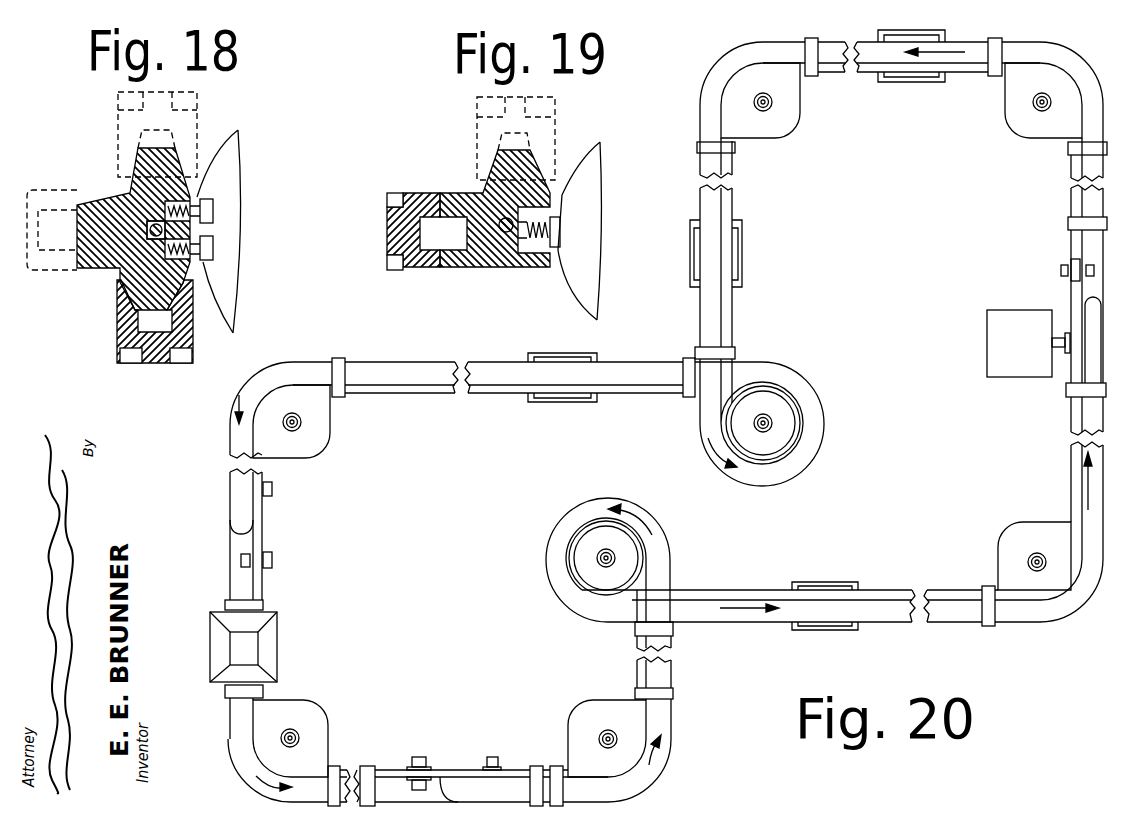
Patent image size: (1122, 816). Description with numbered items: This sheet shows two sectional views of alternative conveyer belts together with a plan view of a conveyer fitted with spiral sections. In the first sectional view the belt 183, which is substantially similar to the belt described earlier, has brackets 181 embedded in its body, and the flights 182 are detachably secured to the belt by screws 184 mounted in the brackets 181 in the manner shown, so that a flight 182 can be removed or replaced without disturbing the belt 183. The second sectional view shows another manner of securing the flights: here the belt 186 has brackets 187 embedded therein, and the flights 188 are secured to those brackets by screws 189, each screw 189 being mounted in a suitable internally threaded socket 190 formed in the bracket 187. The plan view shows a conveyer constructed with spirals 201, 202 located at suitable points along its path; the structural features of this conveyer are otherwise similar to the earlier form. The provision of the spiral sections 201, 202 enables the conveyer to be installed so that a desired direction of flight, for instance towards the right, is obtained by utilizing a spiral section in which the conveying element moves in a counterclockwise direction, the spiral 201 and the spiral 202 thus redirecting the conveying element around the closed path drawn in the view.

In FIG. 18, the bracket 181 is at (192, 197).
In FIG. 18, the flight 182 is at (223, 227).
In FIG. 18, the belt 183 is at (133, 190).
In FIG. 18, the screw 184 is at (215, 212).
In FIG. 19, the belt 186 is at (490, 202).
In FIG. 19, the bracket 187 is at (513, 260).
In FIG. 19, the flight 188 is at (587, 180).
In FIG. 19, the screw 189 is at (560, 228).
In FIG. 19, the internally threaded socket 190 is at (540, 253).
In FIG. 20, the spiral 201 is at (557, 575).
In FIG. 20, the spiral 202 is at (815, 428).